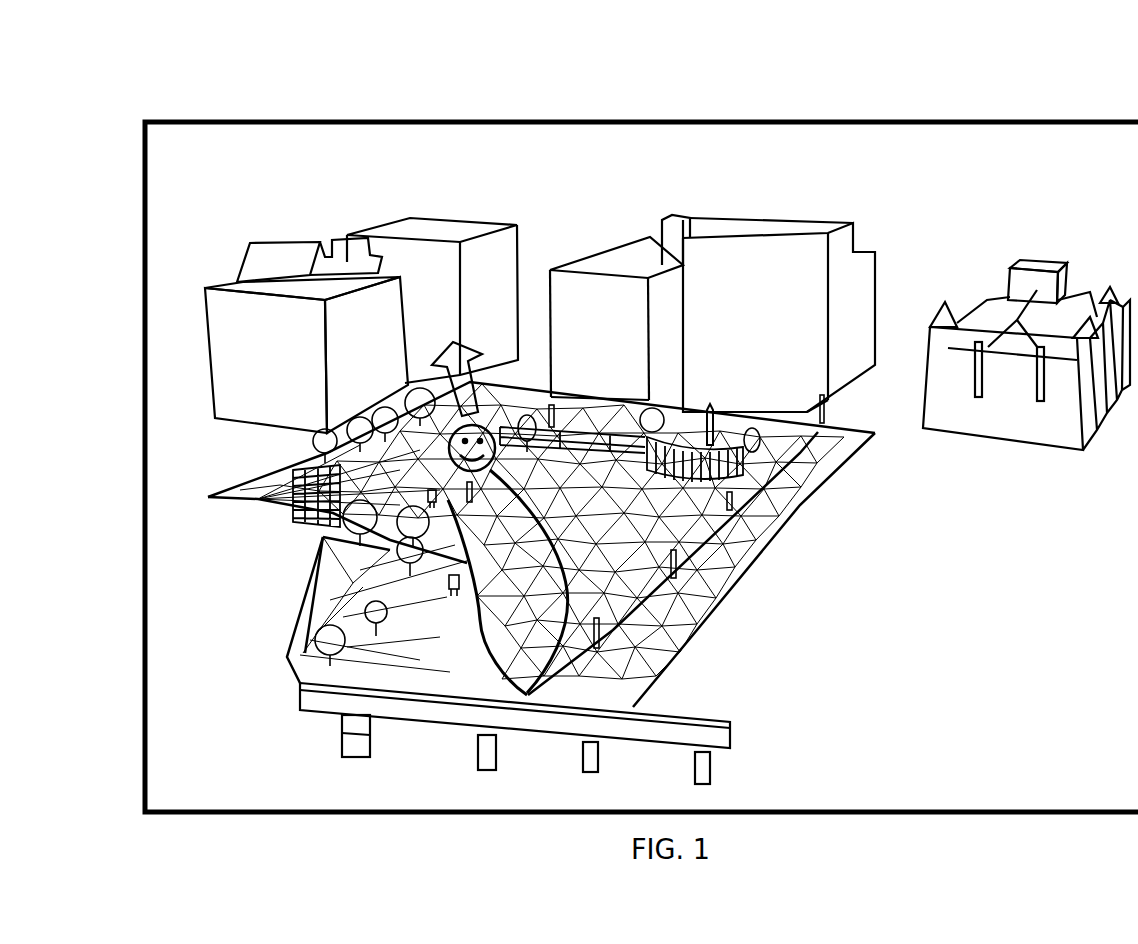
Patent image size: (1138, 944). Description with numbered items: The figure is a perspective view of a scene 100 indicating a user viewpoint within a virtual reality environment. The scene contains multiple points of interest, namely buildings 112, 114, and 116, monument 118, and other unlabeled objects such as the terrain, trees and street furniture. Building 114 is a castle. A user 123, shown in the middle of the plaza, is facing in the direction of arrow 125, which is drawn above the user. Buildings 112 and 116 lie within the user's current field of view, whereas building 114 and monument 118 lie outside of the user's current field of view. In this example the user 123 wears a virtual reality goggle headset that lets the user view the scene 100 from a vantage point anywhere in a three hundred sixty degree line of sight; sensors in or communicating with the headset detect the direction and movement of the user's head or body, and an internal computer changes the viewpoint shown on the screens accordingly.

The virtual environment scene 100 is at (889, 79).
The building 112 is at (436, 231).
The building 114 is at (1045, 262).
The building 116 is at (228, 300).
The monument 118 is at (710, 404).
The user 123 is at (535, 486).
The arrow 125 is at (463, 362).